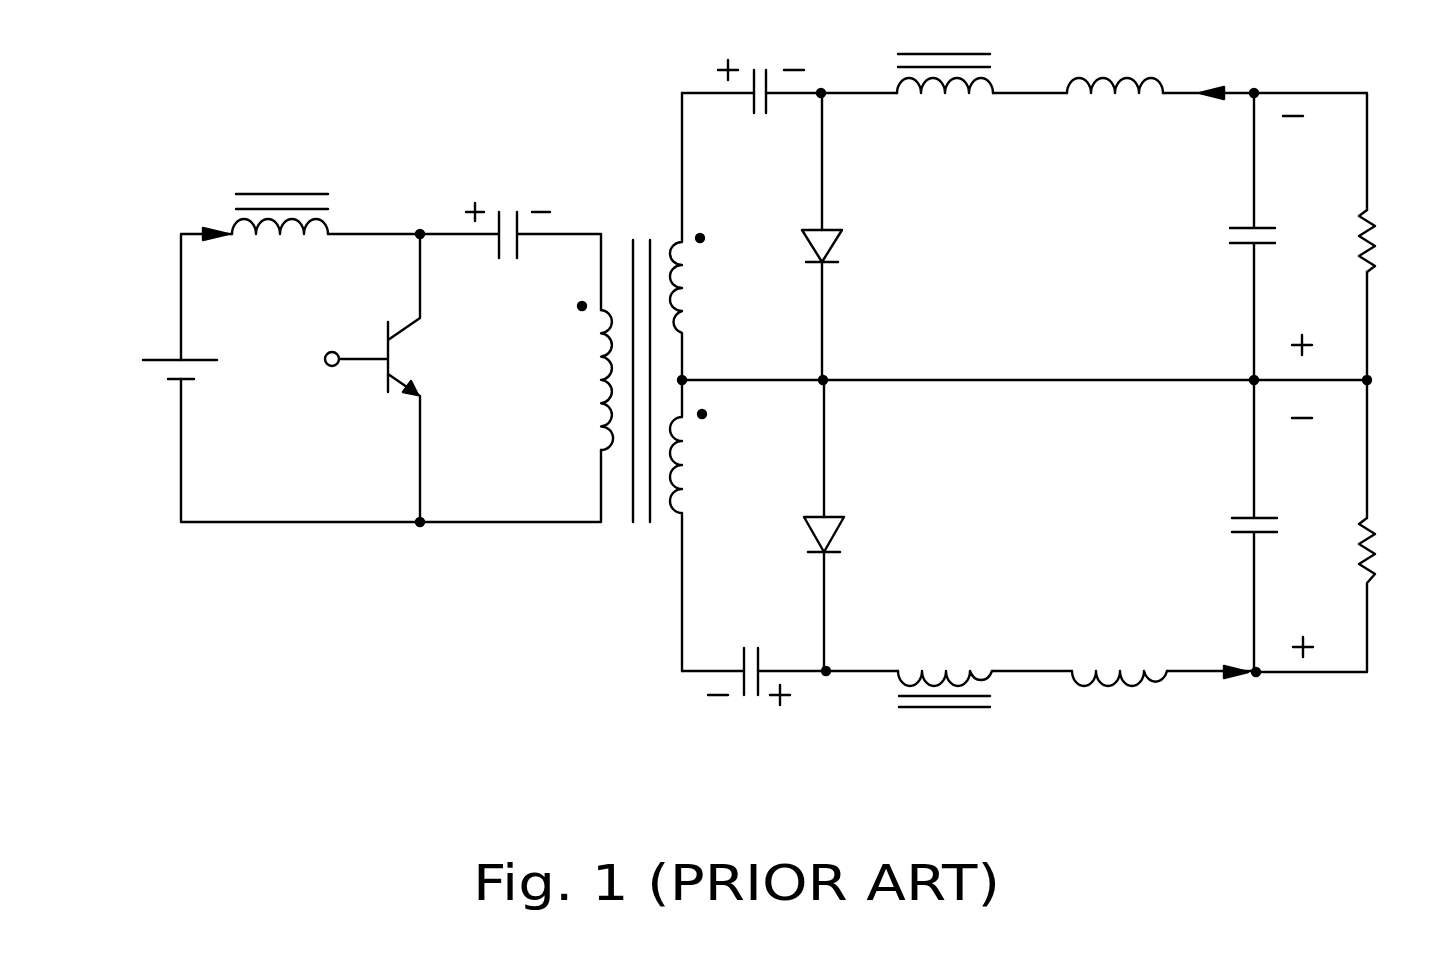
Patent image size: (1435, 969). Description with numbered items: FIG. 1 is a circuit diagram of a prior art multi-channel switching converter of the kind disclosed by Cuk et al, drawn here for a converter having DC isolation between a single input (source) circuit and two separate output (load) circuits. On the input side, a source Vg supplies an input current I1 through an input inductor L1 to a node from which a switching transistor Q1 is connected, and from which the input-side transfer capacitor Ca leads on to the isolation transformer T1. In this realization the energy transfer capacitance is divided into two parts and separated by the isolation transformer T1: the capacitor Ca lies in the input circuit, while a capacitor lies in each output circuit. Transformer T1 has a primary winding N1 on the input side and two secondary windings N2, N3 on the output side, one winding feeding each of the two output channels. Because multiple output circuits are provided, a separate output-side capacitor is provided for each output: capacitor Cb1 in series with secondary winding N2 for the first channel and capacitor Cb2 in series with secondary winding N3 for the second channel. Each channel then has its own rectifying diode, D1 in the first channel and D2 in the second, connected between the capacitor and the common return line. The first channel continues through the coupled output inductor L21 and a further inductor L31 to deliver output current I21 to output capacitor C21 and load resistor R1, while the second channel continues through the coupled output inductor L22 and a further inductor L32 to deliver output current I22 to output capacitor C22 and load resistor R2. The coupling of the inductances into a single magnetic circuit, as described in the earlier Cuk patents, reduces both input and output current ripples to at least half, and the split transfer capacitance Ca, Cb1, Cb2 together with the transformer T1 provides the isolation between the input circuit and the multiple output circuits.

The input current I1 is at (207, 213).
The input inductor L1 is at (280, 193).
The input voltage source Vg is at (168, 350).
The switching transistor Q1 is at (389, 378).
The capacitor Ca is at (508, 212).
The isolation transformer T1 is at (638, 360).
The primary winding N1 is at (581, 376).
The first secondary winding N2 is at (699, 236).
The second secondary winding N3 is at (699, 525).
The capacitor Cb1 is at (761, 111).
The capacitor Cb2 is at (749, 659).
The first rectifier diode D1 is at (854, 236).
The second rectifier diode D2 is at (855, 525).
The first output inductor L21 is at (945, 100).
The second output inductor L22 is at (945, 670).
The first additional inductor L31 is at (1115, 68).
The second additional inductor L32 is at (1119, 709).
The first output current I21 is at (1221, 79).
The second output current I22 is at (1222, 657).
The first output capacitor C21 is at (1235, 236).
The second output capacitor C22 is at (1231, 526).
The first load resistor R1 is at (1392, 241).
The second load resistor R2 is at (1341, 526).